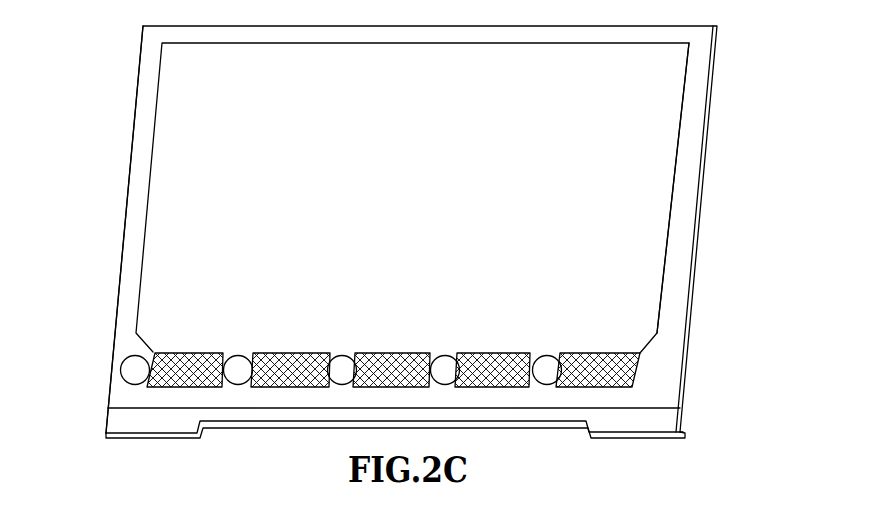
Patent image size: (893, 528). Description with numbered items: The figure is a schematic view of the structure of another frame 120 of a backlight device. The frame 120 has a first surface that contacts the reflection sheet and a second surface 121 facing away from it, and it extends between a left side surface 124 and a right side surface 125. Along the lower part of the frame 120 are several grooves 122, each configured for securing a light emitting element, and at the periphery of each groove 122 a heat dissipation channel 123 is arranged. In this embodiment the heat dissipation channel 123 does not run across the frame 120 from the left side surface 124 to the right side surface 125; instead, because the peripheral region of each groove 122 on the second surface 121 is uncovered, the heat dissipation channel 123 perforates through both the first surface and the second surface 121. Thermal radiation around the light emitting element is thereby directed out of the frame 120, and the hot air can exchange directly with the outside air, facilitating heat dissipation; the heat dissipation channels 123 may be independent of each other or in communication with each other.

The frame 120 is at (140, 127).
The second surface 121 is at (688, 163).
The groove 122 is at (200, 353).
The heat dissipation channel 123 is at (443, 353).
The left side surface 124 is at (120, 283).
The right side surface 125 is at (693, 293).